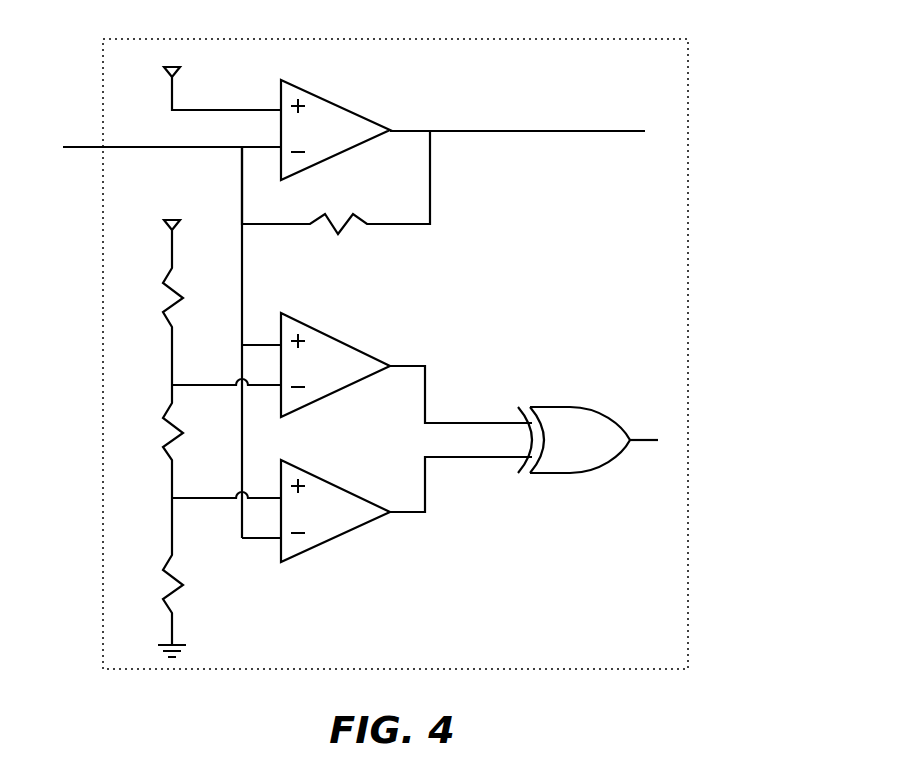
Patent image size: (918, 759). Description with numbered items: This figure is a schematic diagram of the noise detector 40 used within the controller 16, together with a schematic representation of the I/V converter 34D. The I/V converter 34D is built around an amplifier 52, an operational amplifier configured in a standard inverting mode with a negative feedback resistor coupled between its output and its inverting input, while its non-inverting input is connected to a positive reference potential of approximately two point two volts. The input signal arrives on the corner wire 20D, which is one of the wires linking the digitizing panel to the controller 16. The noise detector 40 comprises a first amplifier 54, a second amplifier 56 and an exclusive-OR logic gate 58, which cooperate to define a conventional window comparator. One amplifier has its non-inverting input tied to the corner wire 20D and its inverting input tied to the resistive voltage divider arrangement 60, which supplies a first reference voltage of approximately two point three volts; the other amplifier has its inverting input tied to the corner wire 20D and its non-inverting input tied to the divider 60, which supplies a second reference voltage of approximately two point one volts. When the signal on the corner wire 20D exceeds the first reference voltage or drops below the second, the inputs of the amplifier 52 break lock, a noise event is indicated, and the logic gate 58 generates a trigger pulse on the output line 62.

The controller 16 is at (688, 75).
The corner wire 20D is at (80, 146).
The I/V converter 34D is at (473, 105).
The amplifier 52 is at (347, 102).
The first amplifier 54 is at (347, 338).
The second amplifier 56 is at (355, 532).
The resistive voltage divider arrangement 60 is at (138, 356).
The noise detector 40 is at (530, 376).
The exclusive-OR logic gate 58 is at (590, 470).
The output line 62 is at (642, 432).